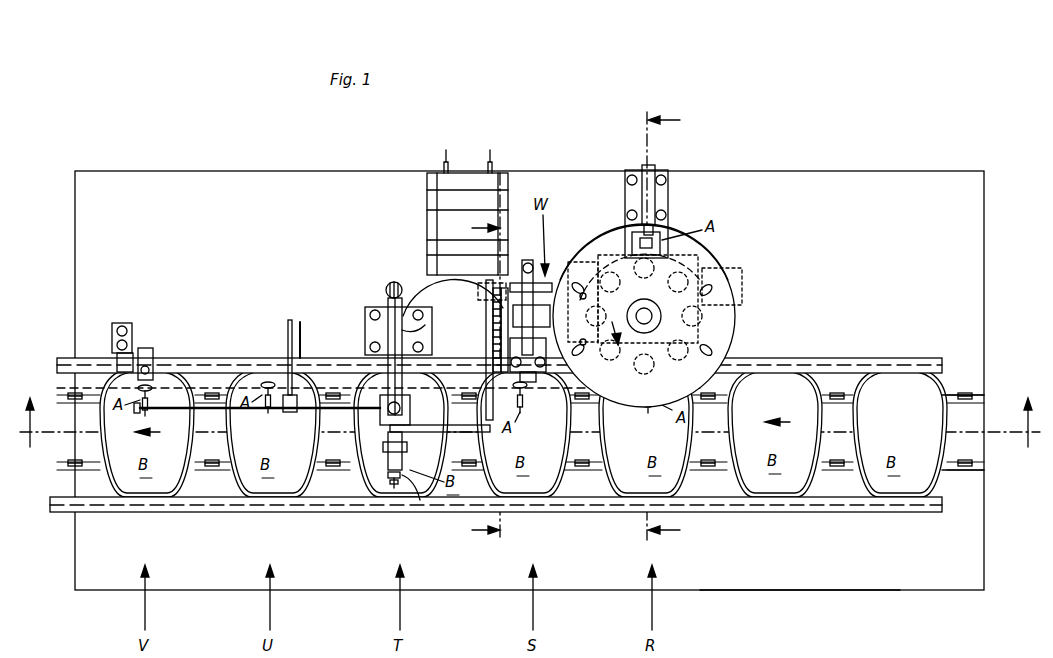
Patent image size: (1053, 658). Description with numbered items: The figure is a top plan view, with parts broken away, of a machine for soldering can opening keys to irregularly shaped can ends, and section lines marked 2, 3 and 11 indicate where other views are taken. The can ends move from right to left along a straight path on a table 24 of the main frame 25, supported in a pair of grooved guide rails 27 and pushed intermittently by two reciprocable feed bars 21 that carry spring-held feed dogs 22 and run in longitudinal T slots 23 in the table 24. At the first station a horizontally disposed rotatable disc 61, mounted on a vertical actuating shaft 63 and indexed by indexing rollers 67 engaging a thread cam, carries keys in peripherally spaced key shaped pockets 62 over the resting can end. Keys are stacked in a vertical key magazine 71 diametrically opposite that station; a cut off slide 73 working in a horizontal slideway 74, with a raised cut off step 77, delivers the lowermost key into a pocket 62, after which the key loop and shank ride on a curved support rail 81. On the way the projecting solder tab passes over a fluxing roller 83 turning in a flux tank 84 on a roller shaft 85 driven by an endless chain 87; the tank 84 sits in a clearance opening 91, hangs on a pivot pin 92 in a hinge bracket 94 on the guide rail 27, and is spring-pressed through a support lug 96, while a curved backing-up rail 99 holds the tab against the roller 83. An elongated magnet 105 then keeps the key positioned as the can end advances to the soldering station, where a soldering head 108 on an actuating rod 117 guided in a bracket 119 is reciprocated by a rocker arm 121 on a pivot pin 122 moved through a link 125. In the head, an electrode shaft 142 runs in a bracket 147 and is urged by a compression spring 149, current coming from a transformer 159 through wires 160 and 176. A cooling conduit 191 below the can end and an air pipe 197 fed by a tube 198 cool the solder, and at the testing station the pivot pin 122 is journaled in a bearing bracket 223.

The section line 2- 2 is at (526, 411).
The section line 3- 3 is at (670, 327).
The section line 11- 11 is at (471, 357).
The feed bars 21 is at (842, 462).
The feed dogs 22 is at (212, 392).
The T slots 23 is at (978, 392).
The table 24 is at (907, 565).
The frame 25 is at (826, 590).
The guide rails 27 is at (890, 365).
The rotatable disc 61 is at (715, 330).
The key shaped pockets 62 is at (716, 290).
The actuating shaft 63 is at (662, 303).
The indexing rollers 67 is at (712, 356).
The key magazine 71 is at (662, 250).
The cut off slide 73 is at (655, 168).
The slideway 74 is at (660, 190).
The cut off step 77 is at (660, 220).
The support rail 81 is at (600, 265).
The fluxing roller 83 is at (606, 338).
The flux tank 84 is at (550, 300).
The roller shaft 85 is at (466, 330).
The endless chain 87 is at (500, 305).
The clearance opening 91 is at (486, 335).
The pivot pin 92 is at (486, 348).
The hinge bracket 94 is at (535, 385).
The support lug 96 is at (527, 262).
The backing-up rail 99 is at (620, 248).
The magnet 105 is at (215, 385).
The soldering head 108 is at (384, 426).
The actuating rod 117 is at (388, 405).
The bracket 119 is at (370, 318).
The rocker arm 121 is at (402, 330).
The pivot pin 122 is at (312, 360).
The link 125 is at (390, 285).
The electrode shaft 142 is at (392, 490).
The bracket 147 is at (402, 458).
The compression spring 149 is at (418, 500).
The transformer 159 is at (432, 216).
The wire 160 is at (458, 432).
The wire 176 is at (453, 297).
The cooling conduit 191 is at (333, 412).
The air pipe 197 is at (285, 412).
The tube 198 is at (288, 332).
The bearing bracket 223 is at (133, 338).